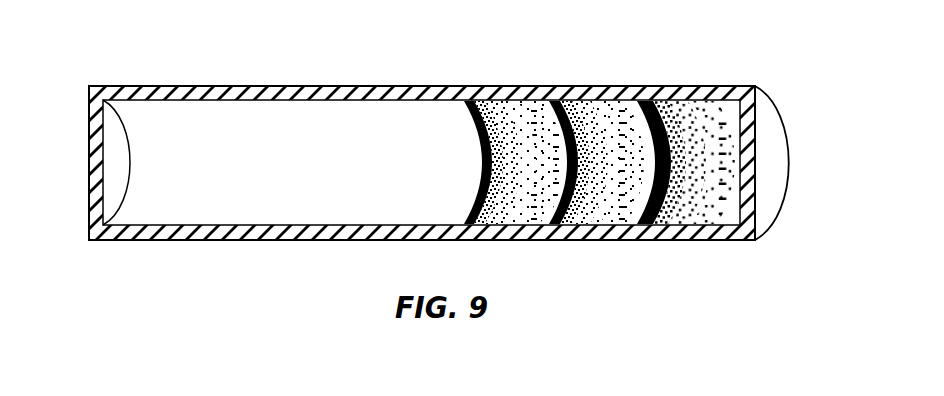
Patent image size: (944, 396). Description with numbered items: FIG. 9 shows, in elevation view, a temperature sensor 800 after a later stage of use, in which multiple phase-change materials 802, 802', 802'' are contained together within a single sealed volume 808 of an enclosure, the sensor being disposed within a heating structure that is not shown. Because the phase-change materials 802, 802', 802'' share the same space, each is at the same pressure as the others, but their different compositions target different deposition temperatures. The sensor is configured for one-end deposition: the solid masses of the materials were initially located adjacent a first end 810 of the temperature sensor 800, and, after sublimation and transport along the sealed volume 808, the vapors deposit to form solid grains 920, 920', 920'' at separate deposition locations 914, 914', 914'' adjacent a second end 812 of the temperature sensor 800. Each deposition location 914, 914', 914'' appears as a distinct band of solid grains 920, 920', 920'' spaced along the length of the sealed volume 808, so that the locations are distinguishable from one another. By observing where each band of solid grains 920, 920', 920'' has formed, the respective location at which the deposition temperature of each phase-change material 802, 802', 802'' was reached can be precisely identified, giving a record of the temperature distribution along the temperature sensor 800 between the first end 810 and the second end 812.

The temperature sensor 800 is at (782, 56).
The phase-change material 802 is at (700, 133).
The phase-change material 802' is at (602, 200).
The phase-change material 802'' is at (467, 162).
The sealed volume 808 is at (247, 146).
The first end 810 is at (83, 163).
The second end 812 is at (771, 157).
The deposition location 914 is at (664, 192).
The deposition location 914' is at (555, 131).
The deposition location 914'' is at (462, 192).
The solid grains 920 is at (700, 133).
The solid grains 920' is at (602, 200).
The solid grains 920'' is at (467, 162).